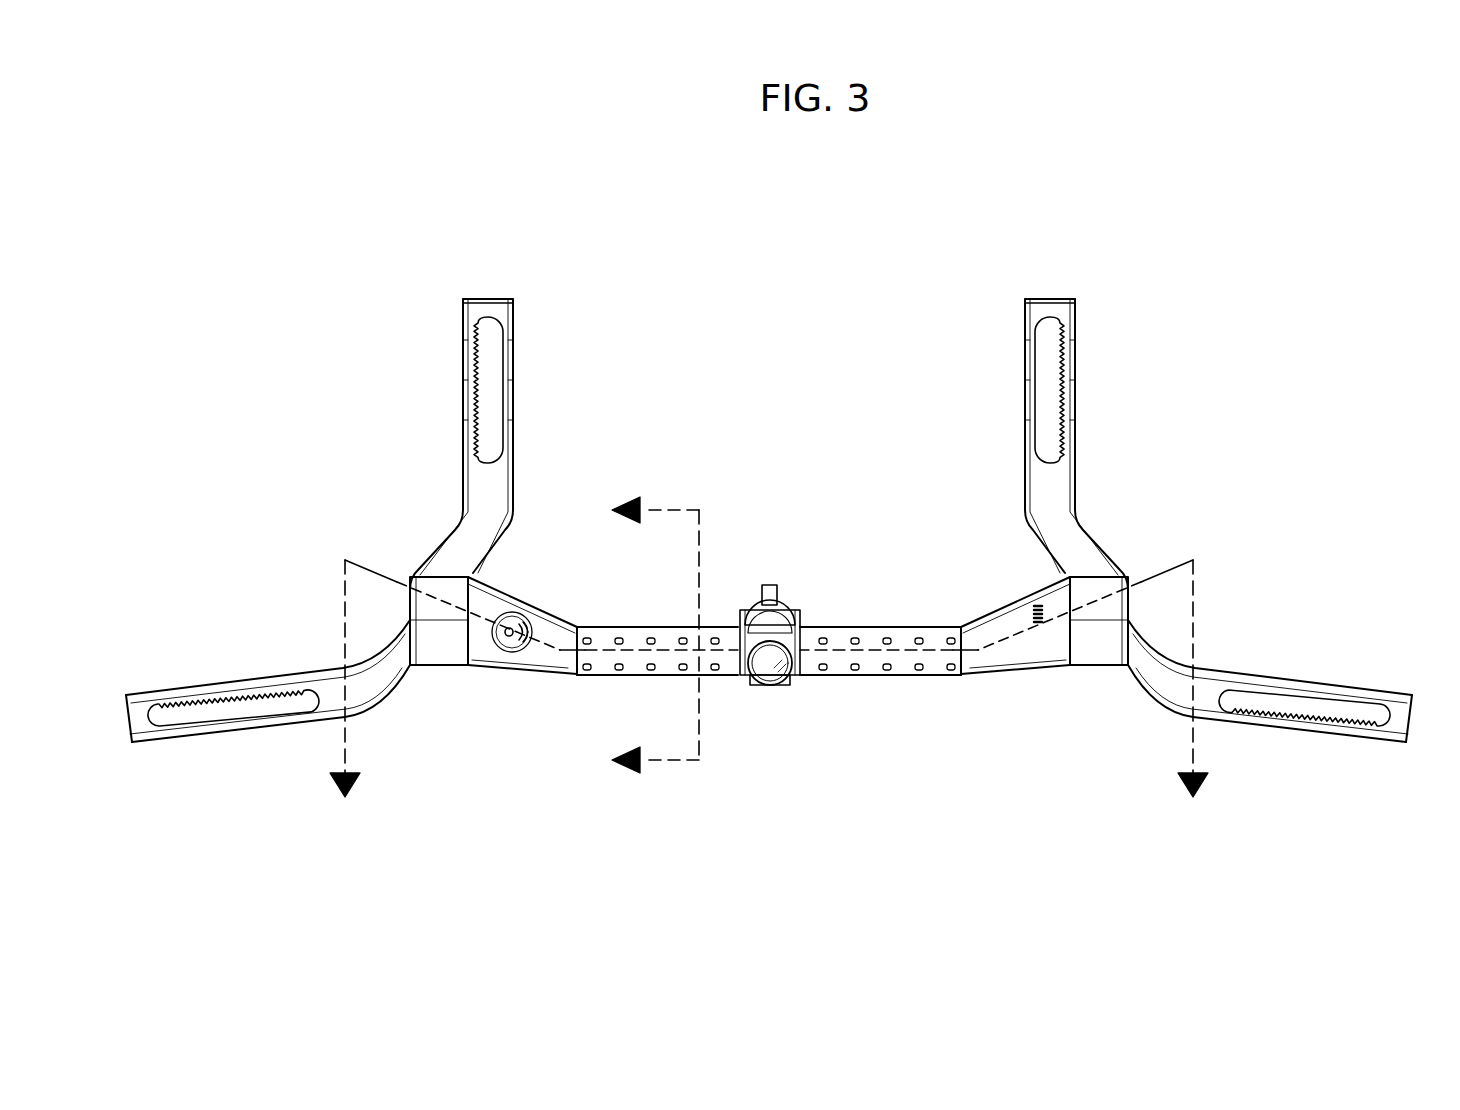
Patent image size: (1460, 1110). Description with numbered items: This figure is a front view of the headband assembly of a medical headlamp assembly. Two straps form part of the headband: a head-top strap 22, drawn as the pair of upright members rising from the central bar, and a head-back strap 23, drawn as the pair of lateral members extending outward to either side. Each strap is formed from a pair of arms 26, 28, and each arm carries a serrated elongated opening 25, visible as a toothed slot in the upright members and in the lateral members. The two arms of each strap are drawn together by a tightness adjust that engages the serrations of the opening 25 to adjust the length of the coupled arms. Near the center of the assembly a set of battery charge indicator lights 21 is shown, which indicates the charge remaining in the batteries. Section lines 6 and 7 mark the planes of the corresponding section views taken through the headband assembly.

The battery charge indicator lights 21 is at (1038, 603).
The head-top strap 22 is at (513, 352).
The head-back strap 23 is at (240, 680).
The serrated elongated opening 25 is at (480, 340).
The arm 26 is at (486, 299).
The arm 28 is at (127, 720).
The section line 6- 6 is at (769, 697).
The section line 7- 7 is at (644, 635).